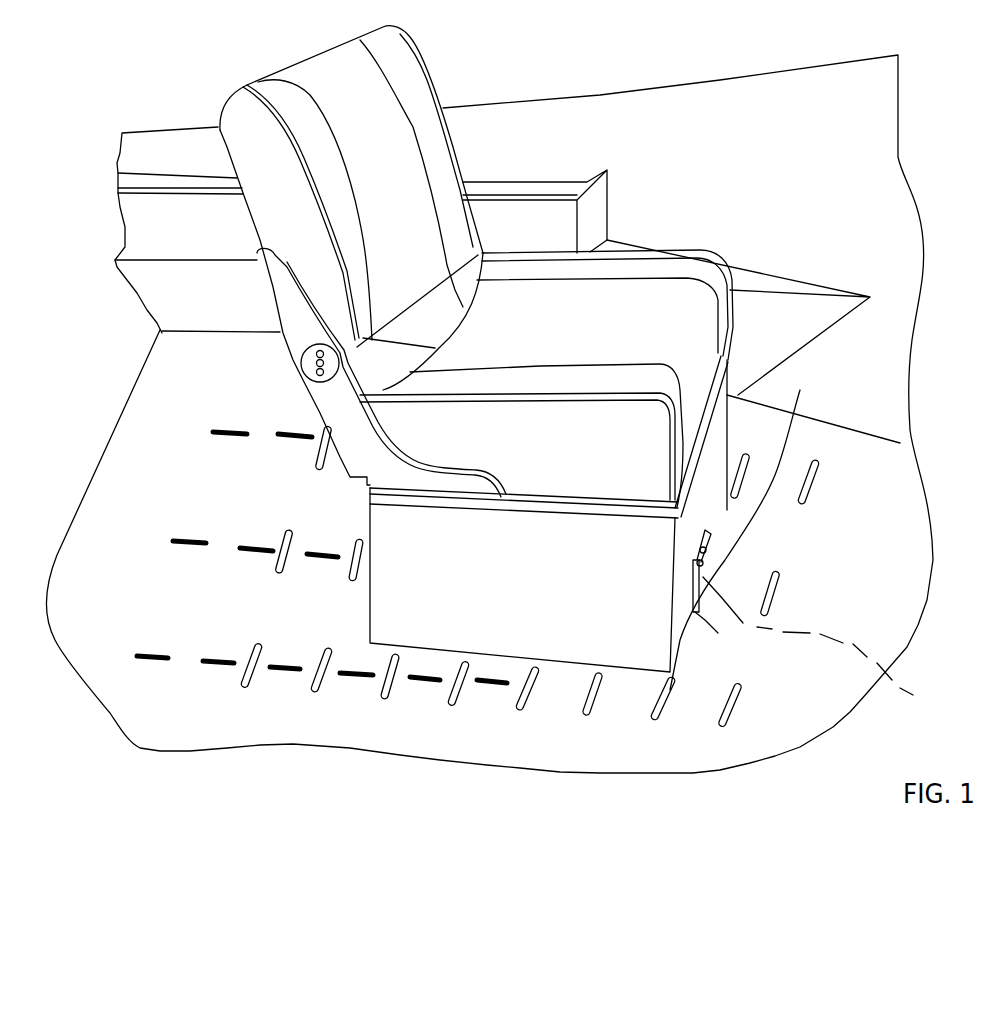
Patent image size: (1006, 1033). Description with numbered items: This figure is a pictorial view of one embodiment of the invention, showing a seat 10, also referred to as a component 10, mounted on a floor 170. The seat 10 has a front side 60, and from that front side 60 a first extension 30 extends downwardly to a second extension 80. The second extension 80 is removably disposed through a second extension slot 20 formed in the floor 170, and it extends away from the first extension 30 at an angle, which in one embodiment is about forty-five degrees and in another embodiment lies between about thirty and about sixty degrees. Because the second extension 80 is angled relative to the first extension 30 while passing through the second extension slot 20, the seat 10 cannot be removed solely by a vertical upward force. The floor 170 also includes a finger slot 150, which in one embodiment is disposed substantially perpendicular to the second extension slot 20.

The seat 10 is at (773, 180).
The second extension slot 20 is at (605, 712).
The first extension 30 is at (800, 390).
The front side 60 is at (716, 467).
The second extension 80 is at (833, 648).
The finger slot 150 is at (190, 537).
The floor 170 is at (262, 365).